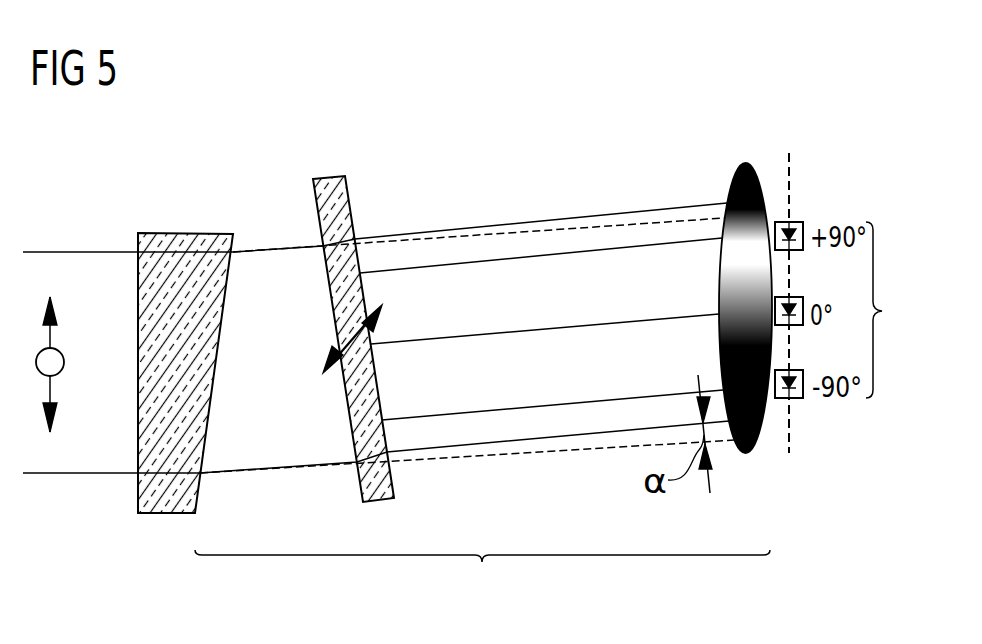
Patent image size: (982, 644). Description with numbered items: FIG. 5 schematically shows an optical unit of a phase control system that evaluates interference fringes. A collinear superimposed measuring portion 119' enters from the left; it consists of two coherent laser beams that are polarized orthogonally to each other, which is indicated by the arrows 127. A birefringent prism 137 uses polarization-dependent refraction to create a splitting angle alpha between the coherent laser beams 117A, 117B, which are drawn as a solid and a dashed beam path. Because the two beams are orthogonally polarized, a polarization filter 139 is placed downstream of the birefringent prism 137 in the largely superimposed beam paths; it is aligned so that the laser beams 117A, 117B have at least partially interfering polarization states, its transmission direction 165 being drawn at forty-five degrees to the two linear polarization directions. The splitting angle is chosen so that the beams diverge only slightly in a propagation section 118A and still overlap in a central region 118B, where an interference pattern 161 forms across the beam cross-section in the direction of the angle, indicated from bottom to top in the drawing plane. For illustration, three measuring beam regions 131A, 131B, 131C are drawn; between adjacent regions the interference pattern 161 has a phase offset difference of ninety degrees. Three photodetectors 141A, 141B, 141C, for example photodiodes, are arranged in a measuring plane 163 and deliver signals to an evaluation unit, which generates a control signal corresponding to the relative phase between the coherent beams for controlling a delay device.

The measuring portion 119' is at (128, 329).
The arrows 127 is at (73, 339).
The birefringent prism 137 is at (180, 240).
The polarization filter 139 is at (325, 180).
The transmission direction 165 is at (352, 336).
The measuring beam region 131A is at (543, 408).
The measuring beam region 131B is at (573, 328).
The measuring beam region 131C is at (537, 258).
The interference pattern 161 is at (738, 176).
The measuring plane 163 is at (792, 157).
The photodetector 141A is at (797, 399).
The photodetector 141B is at (830, 285).
The photodetector 141C is at (791, 221).
The coherent laser beam 117A is at (505, 468).
The coherent laser beam 117B is at (578, 457).
The propagation section 118A is at (482, 573).
The central region 118B is at (904, 310).